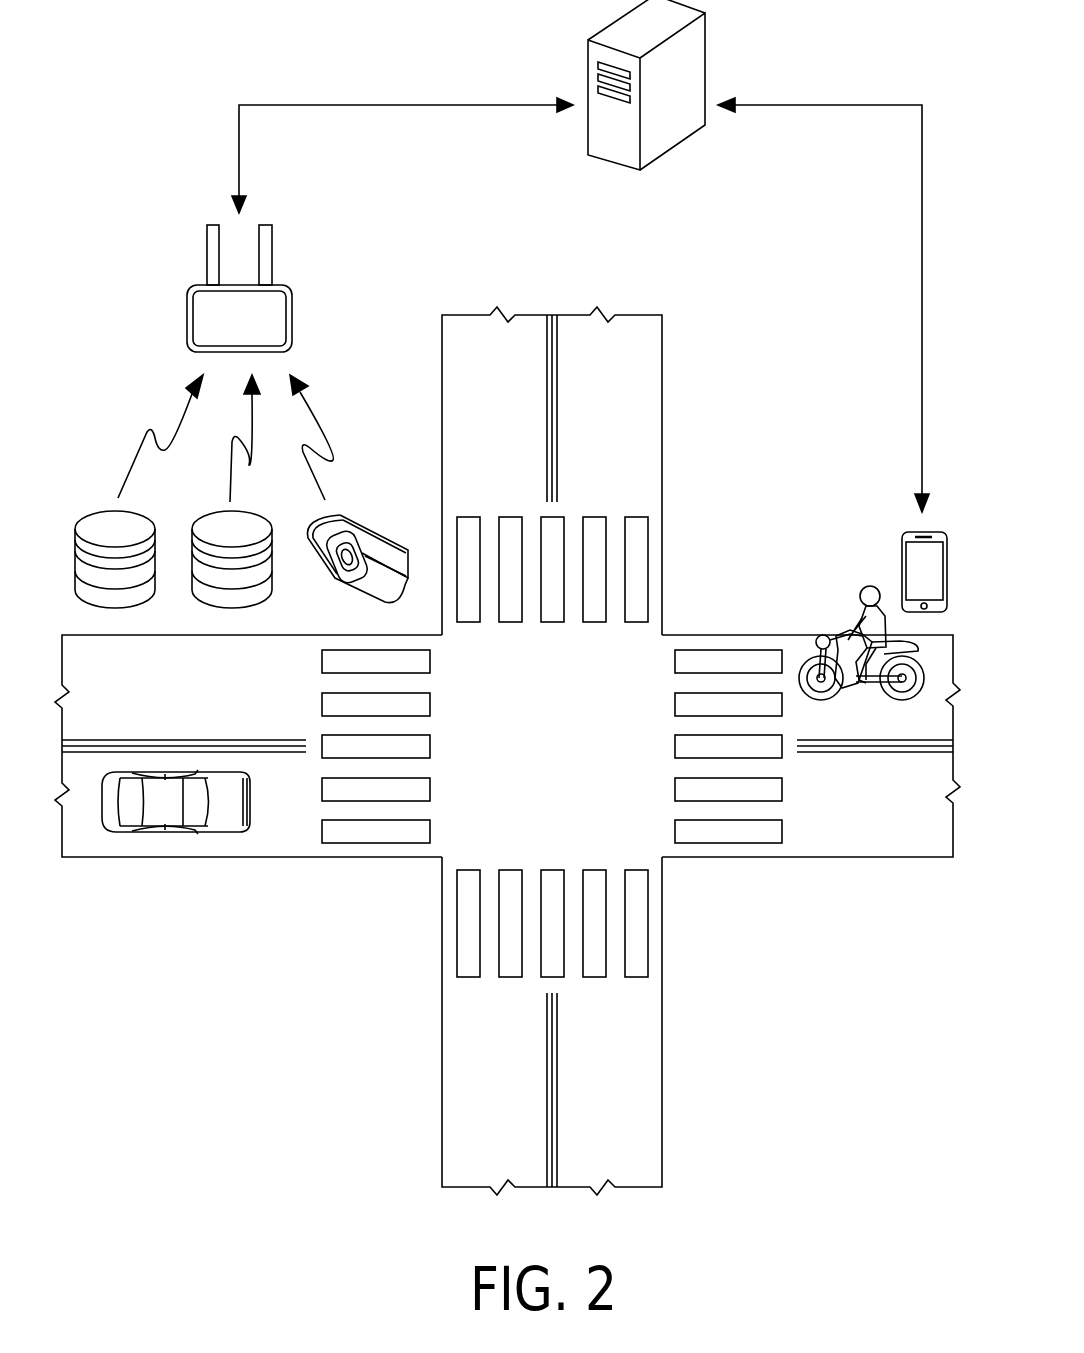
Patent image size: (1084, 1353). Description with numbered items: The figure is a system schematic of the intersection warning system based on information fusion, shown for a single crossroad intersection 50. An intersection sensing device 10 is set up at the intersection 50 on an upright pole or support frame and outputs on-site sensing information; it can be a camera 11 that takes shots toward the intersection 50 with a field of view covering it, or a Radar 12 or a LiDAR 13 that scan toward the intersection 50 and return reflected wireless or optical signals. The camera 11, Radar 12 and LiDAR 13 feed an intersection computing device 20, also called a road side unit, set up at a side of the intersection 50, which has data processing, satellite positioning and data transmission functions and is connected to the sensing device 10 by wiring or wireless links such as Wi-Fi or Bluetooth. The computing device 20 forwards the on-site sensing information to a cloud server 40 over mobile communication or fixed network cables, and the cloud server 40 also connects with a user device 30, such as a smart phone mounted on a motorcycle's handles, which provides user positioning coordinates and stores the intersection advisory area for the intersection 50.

The intersection sensing device 10 is at (116, 418).
The camera 11 is at (368, 545).
The Radar 12 is at (216, 527).
The LiDAR 13 is at (104, 520).
The intersection computing device 20 is at (208, 313).
The user device 30 is at (915, 556).
The cloud server 40 is at (688, 58).
The intersection 50 is at (569, 764).